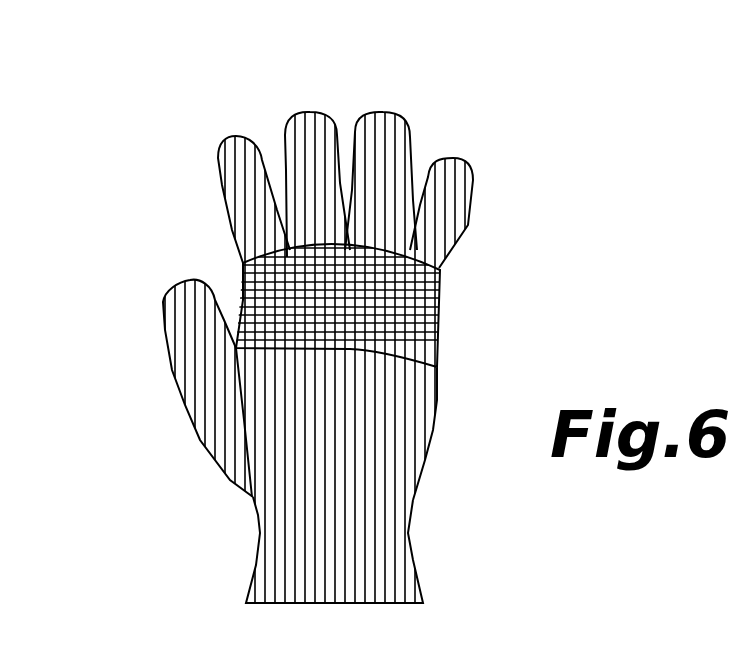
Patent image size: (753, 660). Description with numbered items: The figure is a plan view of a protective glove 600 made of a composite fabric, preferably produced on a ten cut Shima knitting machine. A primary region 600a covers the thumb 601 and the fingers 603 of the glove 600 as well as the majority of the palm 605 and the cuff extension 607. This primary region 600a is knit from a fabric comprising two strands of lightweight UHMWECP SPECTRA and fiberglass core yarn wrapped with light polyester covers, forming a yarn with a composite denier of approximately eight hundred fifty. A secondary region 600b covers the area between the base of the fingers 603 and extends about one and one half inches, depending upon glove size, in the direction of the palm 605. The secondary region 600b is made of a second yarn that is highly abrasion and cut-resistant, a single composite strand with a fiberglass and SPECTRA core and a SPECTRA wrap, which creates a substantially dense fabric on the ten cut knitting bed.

The glove 600 is at (331, 310).
The primary region 600a is at (322, 210).
The secondary region 600b is at (440, 313).
The thumb 601 is at (160, 307).
The fingers 603 is at (455, 160).
The palm 605 is at (437, 410).
The cuff extension 607 is at (248, 580).